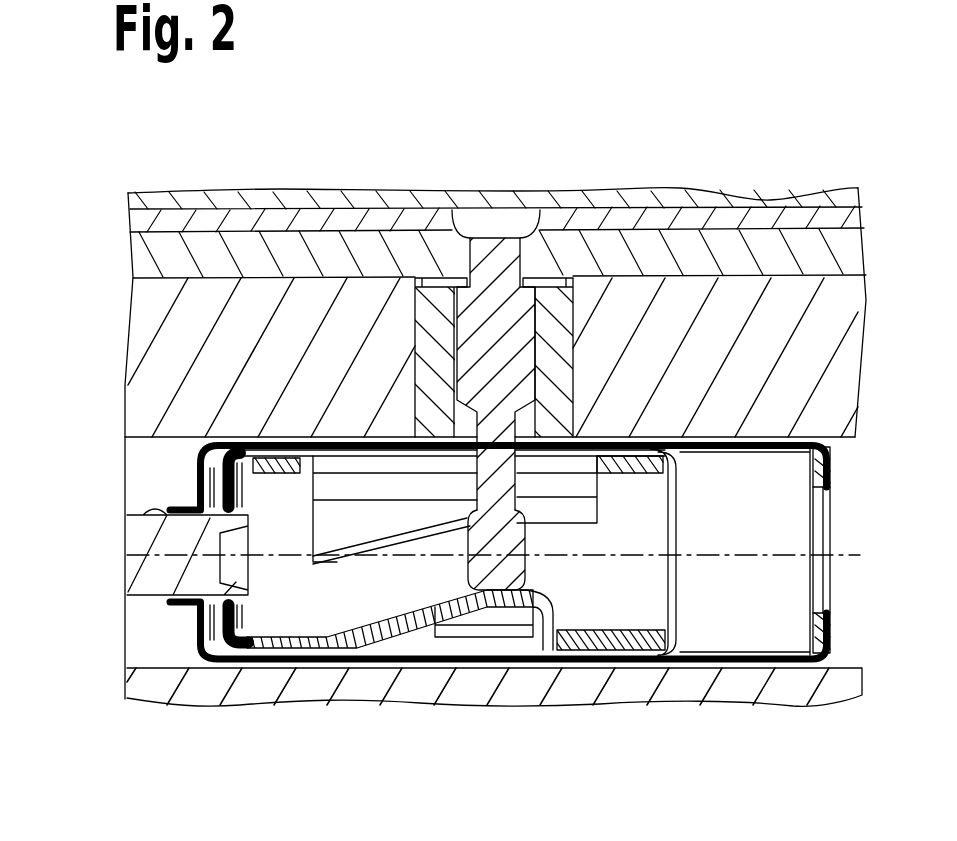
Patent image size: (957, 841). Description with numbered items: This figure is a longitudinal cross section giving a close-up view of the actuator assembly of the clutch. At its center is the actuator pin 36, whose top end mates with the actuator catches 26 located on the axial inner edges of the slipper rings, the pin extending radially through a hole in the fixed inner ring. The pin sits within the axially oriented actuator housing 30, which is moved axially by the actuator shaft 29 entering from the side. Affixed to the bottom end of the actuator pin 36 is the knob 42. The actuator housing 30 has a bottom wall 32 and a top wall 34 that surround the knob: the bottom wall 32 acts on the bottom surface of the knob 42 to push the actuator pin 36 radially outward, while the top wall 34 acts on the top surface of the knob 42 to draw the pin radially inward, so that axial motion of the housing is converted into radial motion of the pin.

The actuator catches 26 is at (451, 231).
The actuator pin 36 is at (488, 290).
The actuator shaft 29 is at (139, 540).
The actuator housing 30 is at (577, 664).
The bottom wall 32 is at (372, 606).
The top wall 34 is at (435, 534).
The knob 42 is at (505, 571).